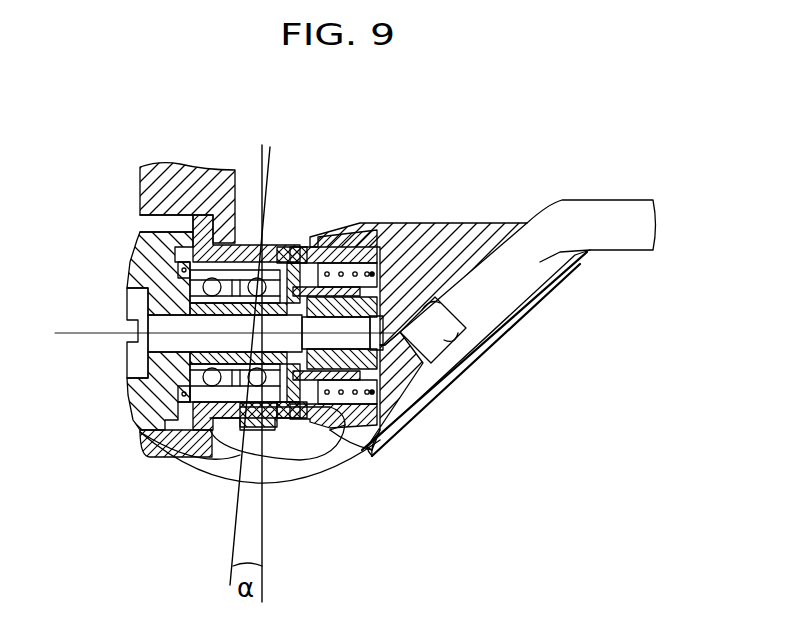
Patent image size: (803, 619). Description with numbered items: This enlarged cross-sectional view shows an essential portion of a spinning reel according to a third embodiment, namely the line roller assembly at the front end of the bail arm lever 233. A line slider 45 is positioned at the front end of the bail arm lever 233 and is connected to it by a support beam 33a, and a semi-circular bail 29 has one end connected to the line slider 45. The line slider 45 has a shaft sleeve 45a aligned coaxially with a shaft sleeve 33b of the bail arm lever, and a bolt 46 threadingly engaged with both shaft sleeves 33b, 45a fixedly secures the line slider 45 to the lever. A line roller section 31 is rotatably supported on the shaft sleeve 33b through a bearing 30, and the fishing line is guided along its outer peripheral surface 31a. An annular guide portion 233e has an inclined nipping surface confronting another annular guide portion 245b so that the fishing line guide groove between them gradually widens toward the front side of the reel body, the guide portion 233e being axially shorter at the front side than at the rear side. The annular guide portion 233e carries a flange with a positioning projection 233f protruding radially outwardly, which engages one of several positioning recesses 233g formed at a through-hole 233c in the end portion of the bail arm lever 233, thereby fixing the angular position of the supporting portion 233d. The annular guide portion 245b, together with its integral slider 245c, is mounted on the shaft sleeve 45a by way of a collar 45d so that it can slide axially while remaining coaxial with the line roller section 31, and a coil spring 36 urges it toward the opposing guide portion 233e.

The bail 29 is at (620, 208).
The bearing 30 is at (172, 417).
The line roller section 31 is at (185, 432).
The outer peripheral surface 31a is at (195, 430).
The support beam 33a is at (285, 465).
The shaft sleeve 33b is at (280, 315).
The coil spring 36 is at (355, 397).
The line slider 45 is at (484, 223).
The shaft sleeve 45a is at (340, 405).
The collar 45d is at (372, 292).
The bolt 46 is at (130, 300).
The bail arm lever 233 is at (140, 183).
The through-hole 233c is at (160, 400).
The supporting portion 233d is at (150, 248).
The annular guide portion 233e is at (233, 243).
The positioning projection 233f is at (190, 285).
The positioning recess 233g is at (140, 222).
The annular guide portion 245b is at (314, 237).
The spring 245c is at (349, 392).